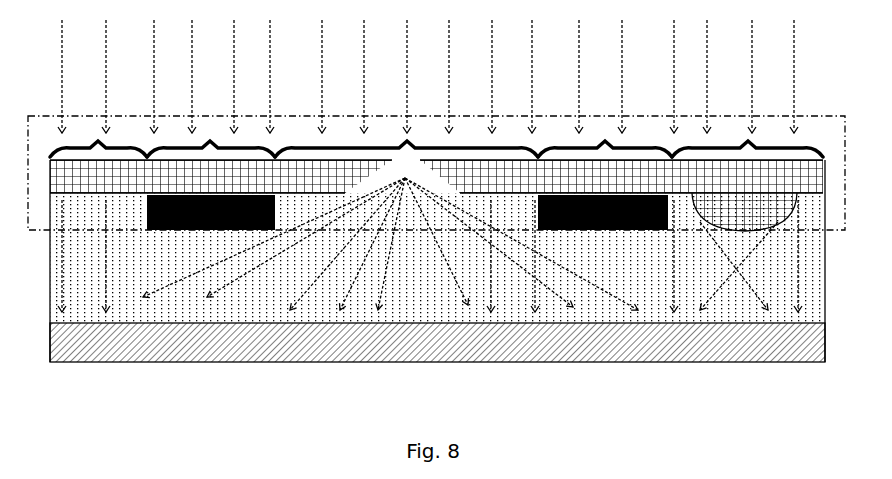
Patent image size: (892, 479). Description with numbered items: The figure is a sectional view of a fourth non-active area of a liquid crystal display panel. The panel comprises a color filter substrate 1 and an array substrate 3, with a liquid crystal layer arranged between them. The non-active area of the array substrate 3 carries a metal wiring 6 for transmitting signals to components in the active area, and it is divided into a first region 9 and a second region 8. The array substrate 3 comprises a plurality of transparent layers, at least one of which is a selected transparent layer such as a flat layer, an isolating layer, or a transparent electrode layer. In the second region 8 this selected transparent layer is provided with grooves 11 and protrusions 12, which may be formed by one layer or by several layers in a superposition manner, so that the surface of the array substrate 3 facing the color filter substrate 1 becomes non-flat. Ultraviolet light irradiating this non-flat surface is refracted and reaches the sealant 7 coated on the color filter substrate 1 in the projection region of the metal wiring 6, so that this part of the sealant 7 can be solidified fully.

The color filter substrate 1 is at (437, 342).
The array substrate 3 is at (47, 232).
The metal wiring 6 is at (407, 212).
The sealant 7 is at (437, 261).
The second region 8 is at (436, 133).
The first region 9 is at (409, 133).
The grooves 11 is at (388, 164).
The protrusions 12 is at (784, 225).